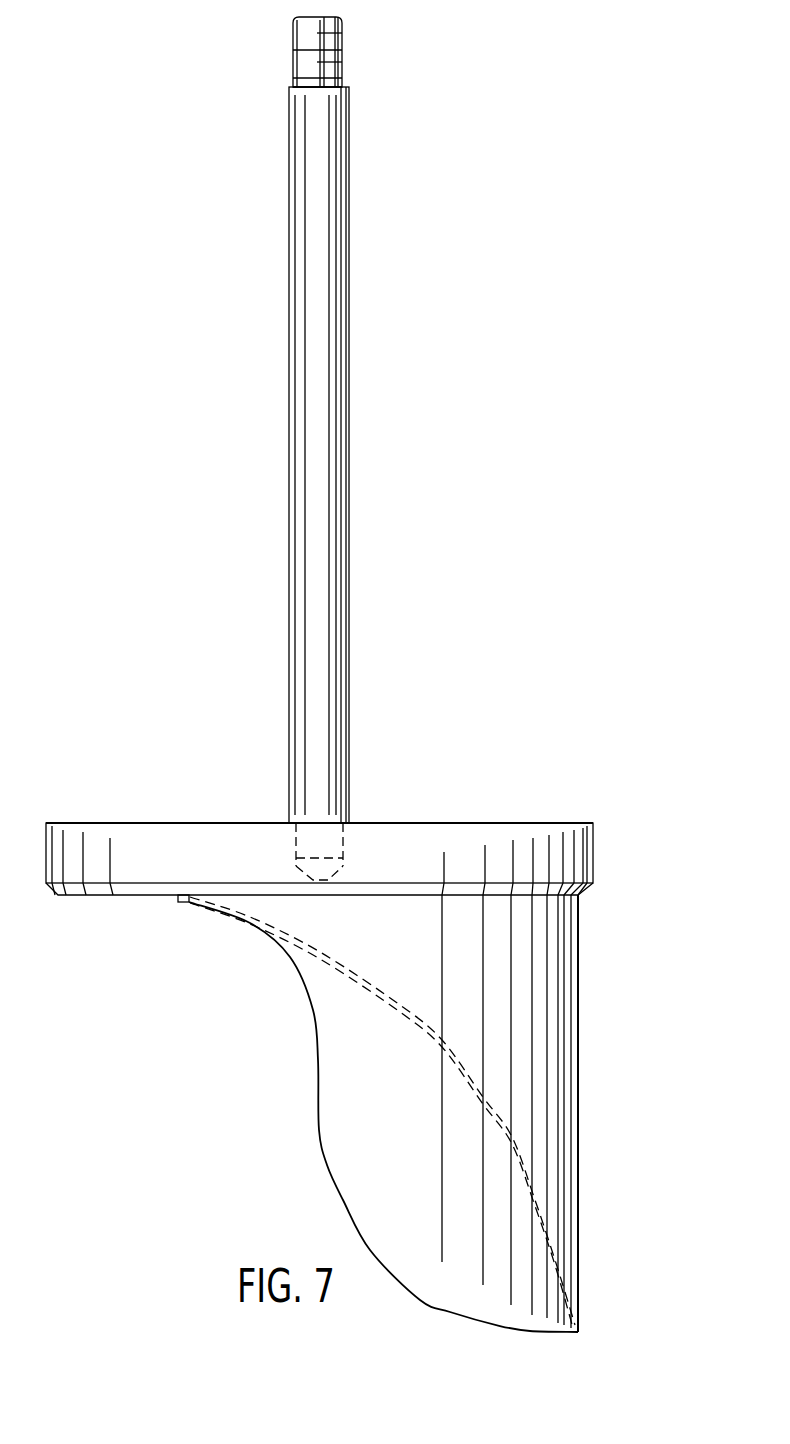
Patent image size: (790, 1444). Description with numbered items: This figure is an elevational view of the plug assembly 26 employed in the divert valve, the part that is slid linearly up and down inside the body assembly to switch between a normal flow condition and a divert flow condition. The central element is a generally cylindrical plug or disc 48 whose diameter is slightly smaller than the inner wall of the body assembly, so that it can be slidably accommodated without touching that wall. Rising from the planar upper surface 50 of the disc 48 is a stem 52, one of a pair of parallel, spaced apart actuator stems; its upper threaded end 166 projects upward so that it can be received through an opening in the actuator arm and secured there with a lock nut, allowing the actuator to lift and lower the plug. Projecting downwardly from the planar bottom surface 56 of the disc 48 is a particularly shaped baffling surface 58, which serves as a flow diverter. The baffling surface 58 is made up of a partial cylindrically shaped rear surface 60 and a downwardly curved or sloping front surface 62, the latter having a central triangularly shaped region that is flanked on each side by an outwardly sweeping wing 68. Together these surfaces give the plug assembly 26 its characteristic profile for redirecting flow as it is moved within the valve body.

The plug assembly 26 is at (484, 643).
The upper threaded end 166 is at (335, 58).
The stem 52 is at (342, 400).
The disc 48 is at (572, 852).
The upper surface 50 is at (480, 822).
The bottom surface 56 is at (100, 887).
The rear surface 60 is at (535, 1034).
The front surface 62 is at (392, 1008).
The baffling surface 58 is at (288, 1073).
The wing 68 is at (348, 1162).